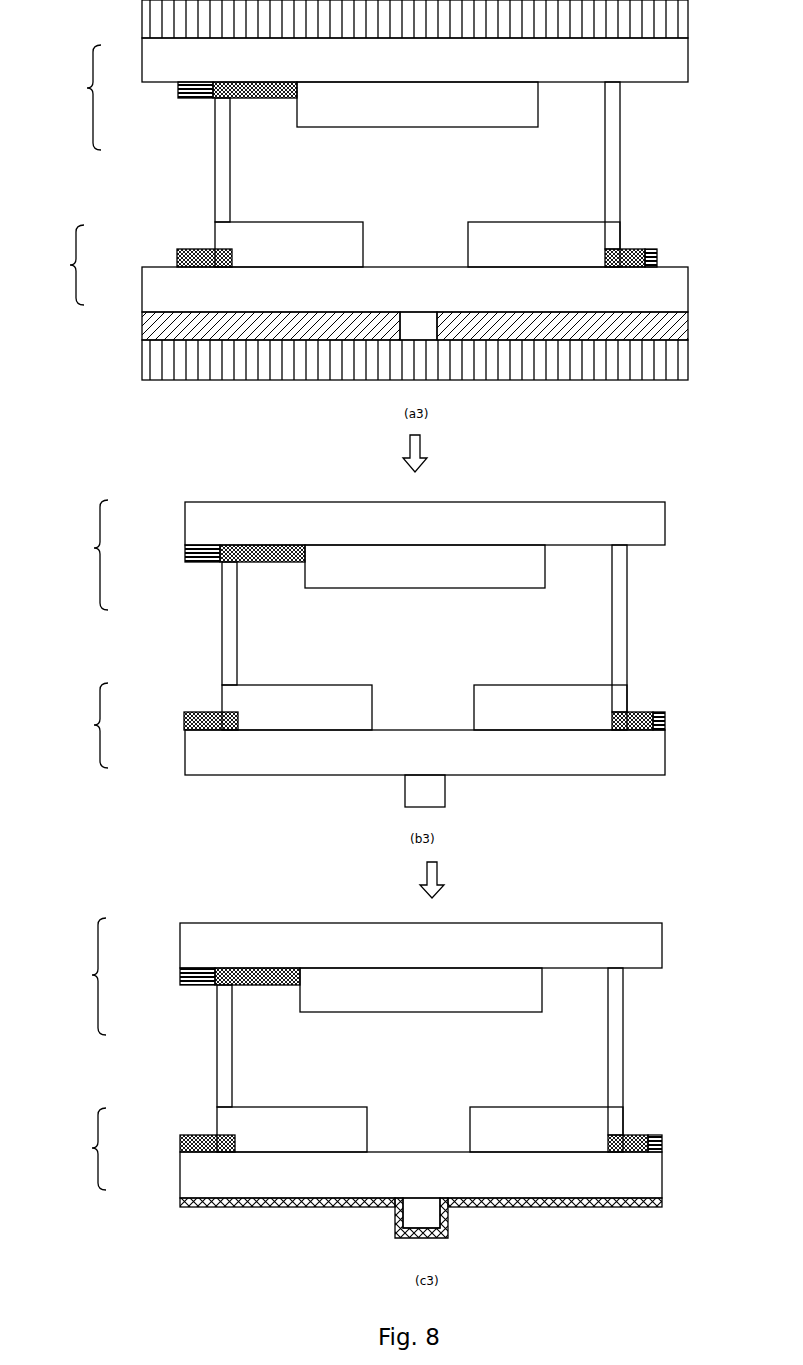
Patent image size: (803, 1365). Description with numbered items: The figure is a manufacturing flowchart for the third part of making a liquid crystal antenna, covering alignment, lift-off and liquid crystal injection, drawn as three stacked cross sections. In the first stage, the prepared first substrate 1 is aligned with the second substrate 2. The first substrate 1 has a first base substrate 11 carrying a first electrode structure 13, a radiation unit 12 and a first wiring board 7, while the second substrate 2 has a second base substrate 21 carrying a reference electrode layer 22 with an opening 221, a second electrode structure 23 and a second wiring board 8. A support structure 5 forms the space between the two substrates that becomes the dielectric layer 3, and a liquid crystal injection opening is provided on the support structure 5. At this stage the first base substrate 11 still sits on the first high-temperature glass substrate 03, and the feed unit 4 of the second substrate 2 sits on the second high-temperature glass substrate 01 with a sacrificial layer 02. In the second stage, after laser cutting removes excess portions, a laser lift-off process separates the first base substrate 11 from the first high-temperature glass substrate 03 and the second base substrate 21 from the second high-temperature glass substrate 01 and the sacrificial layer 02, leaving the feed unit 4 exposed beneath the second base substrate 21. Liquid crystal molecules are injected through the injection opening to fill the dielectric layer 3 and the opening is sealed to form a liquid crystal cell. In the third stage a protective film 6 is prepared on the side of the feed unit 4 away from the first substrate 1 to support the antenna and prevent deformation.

The first substrate 1 is at (90, 540).
The second substrate 2 is at (80, 707).
The dielectric layer 3 is at (356, 619).
The feed unit 4 is at (418, 320).
The support structure 5 is at (222, 158).
The protective film 6 is at (448, 1237).
The first wiring board 7 is at (178, 87).
The second wiring board 8 is at (652, 250).
The first base substrate 11 is at (195, 47).
The radiation unit 12 is at (323, 113).
The first electrode structure 13 is at (285, 98).
The second base substrate 21 is at (200, 297).
The reference electrode layer 22 is at (250, 230).
The opening 221 is at (433, 240).
The second electrode structure 23 is at (190, 258).
The second high-temperature glass substrate 01 is at (210, 360).
The sacrificial layer 02 is at (205, 320).
The first high-temperature glass substrate 03 is at (190, 21).